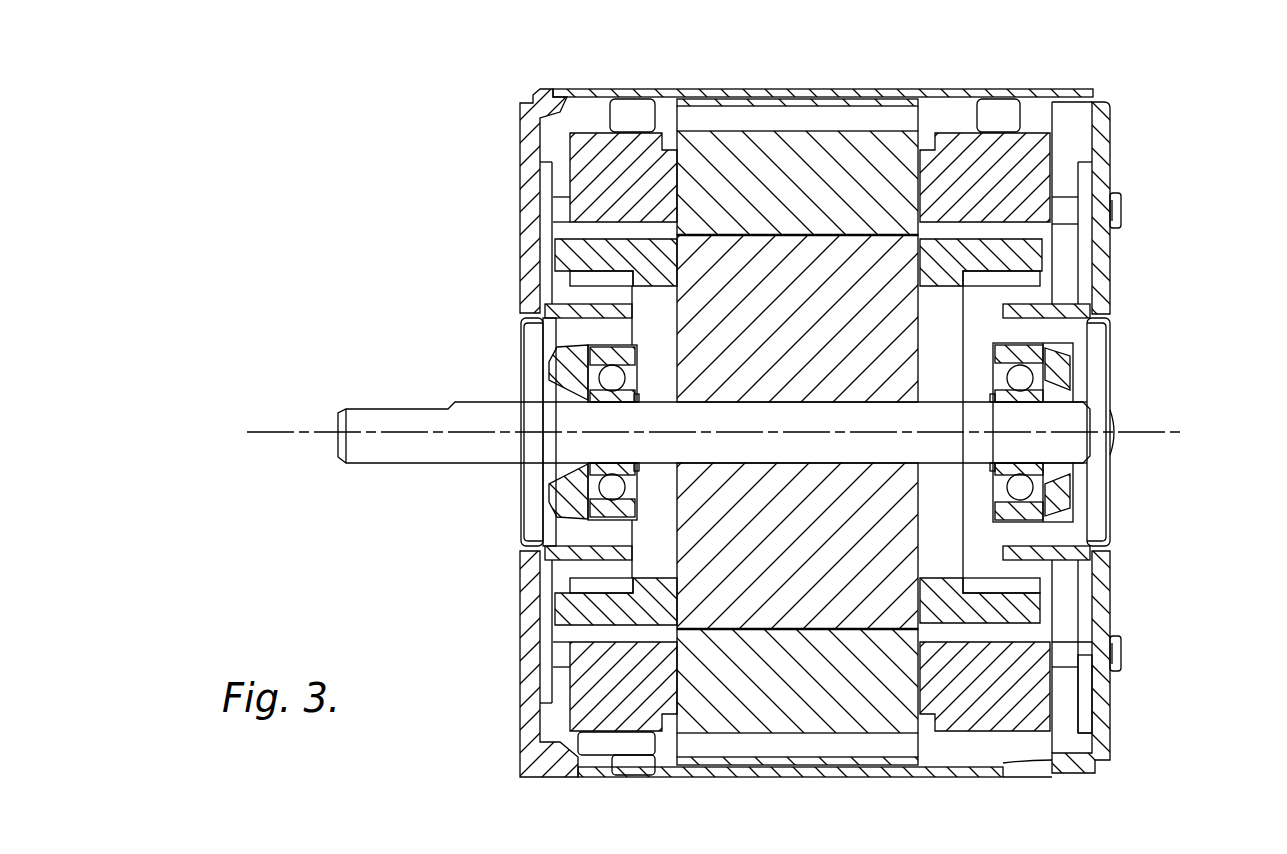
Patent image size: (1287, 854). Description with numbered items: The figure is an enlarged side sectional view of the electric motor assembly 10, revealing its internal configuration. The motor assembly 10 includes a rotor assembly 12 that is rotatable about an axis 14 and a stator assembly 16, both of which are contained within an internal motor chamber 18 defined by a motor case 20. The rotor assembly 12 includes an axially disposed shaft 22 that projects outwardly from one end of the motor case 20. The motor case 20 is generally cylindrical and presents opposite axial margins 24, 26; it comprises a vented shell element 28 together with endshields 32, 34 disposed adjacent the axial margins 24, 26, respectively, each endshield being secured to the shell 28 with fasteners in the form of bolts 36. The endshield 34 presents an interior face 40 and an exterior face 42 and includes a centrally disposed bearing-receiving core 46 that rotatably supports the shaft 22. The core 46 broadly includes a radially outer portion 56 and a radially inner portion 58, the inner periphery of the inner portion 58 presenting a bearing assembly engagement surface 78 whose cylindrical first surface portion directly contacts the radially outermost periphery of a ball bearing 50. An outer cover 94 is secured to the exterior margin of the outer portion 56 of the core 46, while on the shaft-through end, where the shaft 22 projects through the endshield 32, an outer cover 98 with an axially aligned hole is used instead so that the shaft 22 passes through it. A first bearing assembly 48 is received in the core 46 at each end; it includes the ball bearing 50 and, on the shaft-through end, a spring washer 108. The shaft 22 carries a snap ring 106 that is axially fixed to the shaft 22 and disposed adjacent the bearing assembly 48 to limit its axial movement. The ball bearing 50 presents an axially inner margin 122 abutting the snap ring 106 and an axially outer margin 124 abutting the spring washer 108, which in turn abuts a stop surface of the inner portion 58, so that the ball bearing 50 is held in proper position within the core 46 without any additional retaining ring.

The electric motor assembly 10 is at (452, 103).
The rotor assembly 12 is at (600, 250).
The axis 14 is at (282, 431).
The stator assembly 16 is at (960, 170).
The internal motor chamber 18 is at (1072, 130).
The motor case 20 is at (768, 77).
The shaft 22 is at (385, 453).
The axial margin 24 is at (515, 776).
The axial margin 26 is at (1105, 788).
The shell element 28 is at (812, 776).
The endshield 32 is at (530, 185).
The endshield 34 is at (1108, 137).
The bolts 36 is at (1122, 190).
The interior face 40 is at (1085, 610).
The exterior face 42 is at (1118, 630).
The bearing-receiving core 46 is at (1152, 313).
The first bearing assembly 48 is at (598, 516).
The ball bearing 50 is at (1032, 394).
The radially outer portion 56 is at (1070, 300).
The radially inner portion 58 is at (1065, 370).
The bearing assembly engagement surface 78 is at (1000, 508).
The outer cover 94 is at (1112, 455).
The outer cover 98 is at (521, 495).
The snap ring 106 is at (1000, 490).
The spring washer 108 is at (560, 388).
The axially inner margin 122 is at (634, 400).
The axially outer margin 124 is at (598, 470).